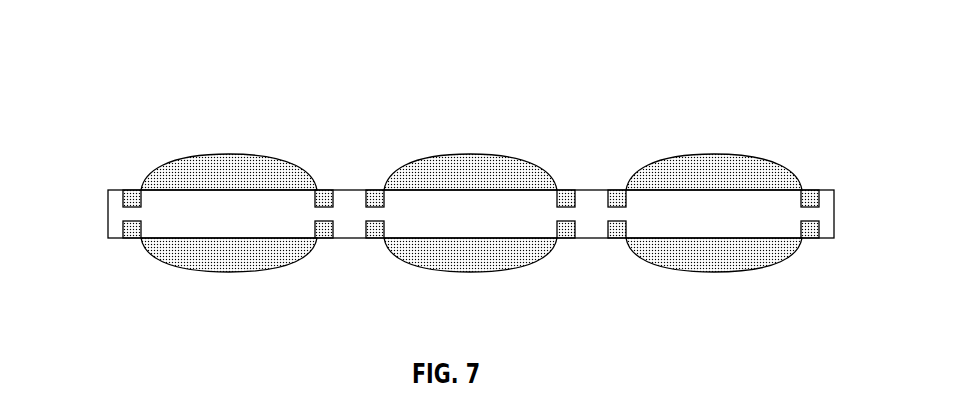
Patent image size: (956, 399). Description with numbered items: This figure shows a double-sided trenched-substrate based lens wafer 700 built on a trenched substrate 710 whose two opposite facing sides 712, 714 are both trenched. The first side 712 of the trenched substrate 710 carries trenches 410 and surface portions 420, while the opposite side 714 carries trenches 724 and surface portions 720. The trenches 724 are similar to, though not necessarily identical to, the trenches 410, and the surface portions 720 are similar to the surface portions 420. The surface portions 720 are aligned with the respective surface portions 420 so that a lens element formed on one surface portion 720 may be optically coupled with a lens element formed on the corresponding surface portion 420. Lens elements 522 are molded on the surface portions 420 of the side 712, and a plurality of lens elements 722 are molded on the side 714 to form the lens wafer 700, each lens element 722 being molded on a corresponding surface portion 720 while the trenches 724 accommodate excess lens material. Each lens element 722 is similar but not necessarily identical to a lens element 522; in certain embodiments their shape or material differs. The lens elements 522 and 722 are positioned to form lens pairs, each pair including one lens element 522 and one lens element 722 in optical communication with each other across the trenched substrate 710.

The lens wafer 700 is at (156, 78).
The trenched substrate 710 is at (107, 215).
The side 712 is at (592, 168).
The side 714 is at (602, 258).
The trenches 410 is at (333, 198).
The trenches 724 is at (333, 230).
The surface portions 420 is at (470, 188).
The surface portions 720 is at (473, 240).
The lens elements 522 is at (727, 158).
The lens elements 722 is at (758, 267).